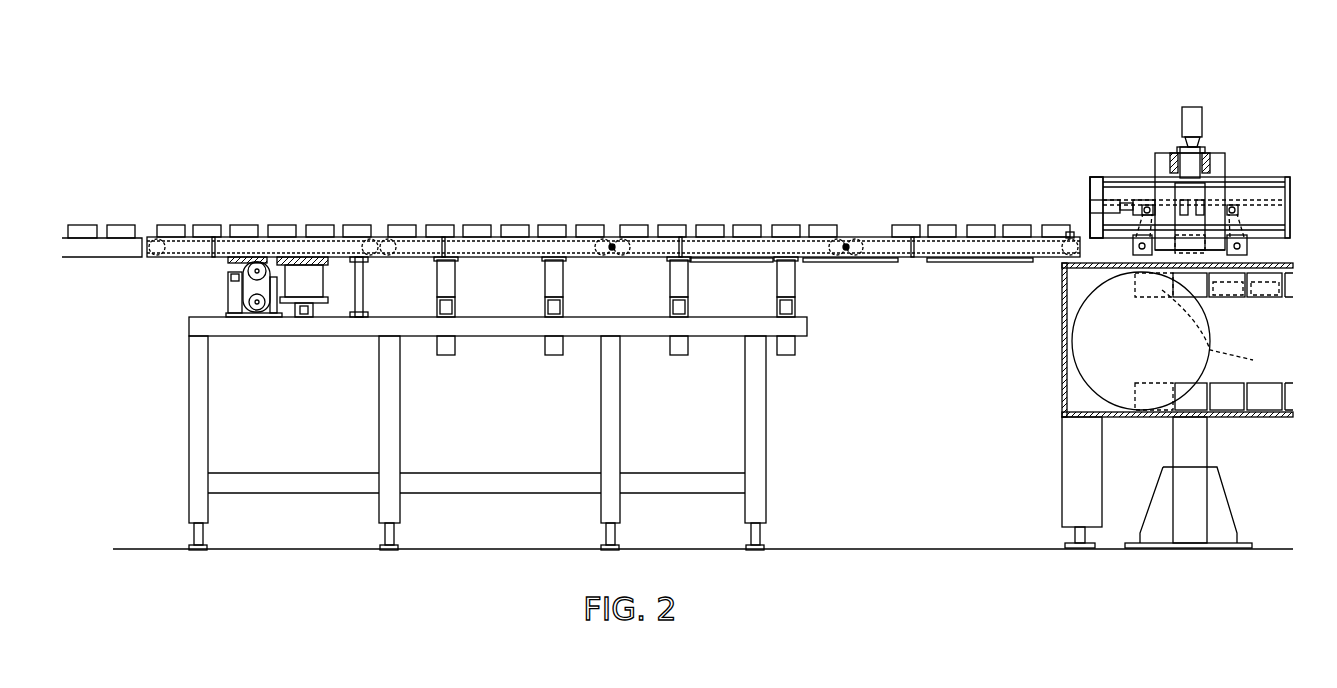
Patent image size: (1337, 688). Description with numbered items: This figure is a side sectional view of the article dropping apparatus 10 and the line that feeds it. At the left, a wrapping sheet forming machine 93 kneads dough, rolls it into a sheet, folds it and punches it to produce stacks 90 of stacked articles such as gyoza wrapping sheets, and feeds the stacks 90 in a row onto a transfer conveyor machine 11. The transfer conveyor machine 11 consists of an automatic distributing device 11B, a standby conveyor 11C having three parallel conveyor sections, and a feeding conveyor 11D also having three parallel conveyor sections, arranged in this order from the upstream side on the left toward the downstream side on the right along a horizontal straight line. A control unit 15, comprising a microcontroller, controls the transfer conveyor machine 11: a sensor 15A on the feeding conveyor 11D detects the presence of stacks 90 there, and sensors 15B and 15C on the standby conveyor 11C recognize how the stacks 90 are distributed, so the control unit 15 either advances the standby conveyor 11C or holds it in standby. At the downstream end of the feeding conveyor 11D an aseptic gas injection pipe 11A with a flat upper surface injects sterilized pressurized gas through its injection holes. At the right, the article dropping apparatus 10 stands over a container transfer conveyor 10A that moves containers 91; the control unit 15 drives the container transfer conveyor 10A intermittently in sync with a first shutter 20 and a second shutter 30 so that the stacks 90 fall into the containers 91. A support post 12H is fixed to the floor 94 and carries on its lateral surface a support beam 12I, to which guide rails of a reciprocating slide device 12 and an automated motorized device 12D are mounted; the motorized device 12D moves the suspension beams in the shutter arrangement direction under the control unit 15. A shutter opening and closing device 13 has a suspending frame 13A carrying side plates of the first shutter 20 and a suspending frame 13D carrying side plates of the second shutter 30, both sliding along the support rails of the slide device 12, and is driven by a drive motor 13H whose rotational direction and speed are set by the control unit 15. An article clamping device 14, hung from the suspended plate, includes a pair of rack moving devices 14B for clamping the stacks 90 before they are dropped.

The article dropping apparatus 10 is at (1090, 72).
The container transfer conveyor 10A is at (1062, 392).
The transfer conveyor machine 11 is at (613, 208).
The aseptic gas injection pipe 11A is at (1080, 240).
The automatic distributing device 11B is at (247, 250).
The standby conveyor 11C is at (712, 250).
The feeding conveyor 11D is at (950, 250).
The reciprocating slide device 12 is at (1191, 174).
The automated motorized device 12D is at (1105, 205).
The support post 12H is at (1197, 258).
The support beam 12I is at (1093, 185).
The shutter opening and closing device 13 is at (1167, 189).
The suspending frame 13A is at (1165, 245).
The suspending frame 13D is at (1240, 252).
The drive motor 13H is at (1190, 112).
The article clamping device 14 is at (1197, 185).
The rack moving devices 14B is at (1195, 165).
The control unit 15 is at (795, 300).
The sensor 15A is at (1070, 230).
The sensor 15B is at (837, 237).
The sensor 15C is at (603, 237).
The first shutter 20 is at (1130, 244).
The second shutter 30 is at (1273, 224).
The stacks 90 is at (82, 225).
The containers 91 is at (1197, 393).
The wrapping sheet forming machine 93 is at (103, 250).
The floor 94 is at (893, 548).